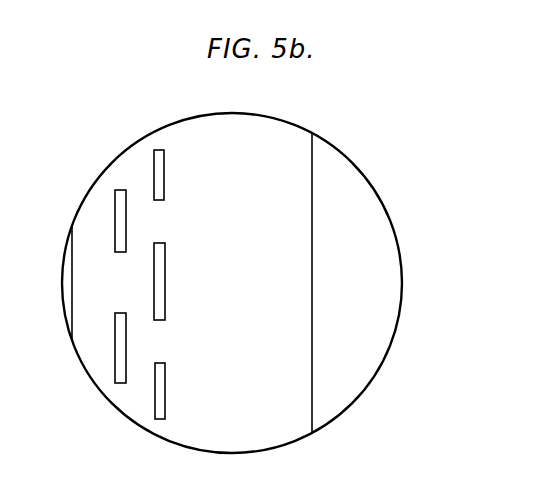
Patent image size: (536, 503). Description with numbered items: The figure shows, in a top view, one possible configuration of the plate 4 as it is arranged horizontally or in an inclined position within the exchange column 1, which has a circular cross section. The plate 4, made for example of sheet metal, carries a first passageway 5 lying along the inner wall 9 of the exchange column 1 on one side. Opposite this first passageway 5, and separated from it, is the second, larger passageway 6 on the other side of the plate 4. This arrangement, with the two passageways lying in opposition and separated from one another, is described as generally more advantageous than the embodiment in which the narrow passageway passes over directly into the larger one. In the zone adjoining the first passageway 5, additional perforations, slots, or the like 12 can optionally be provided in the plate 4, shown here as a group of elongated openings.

The exchange column 1 is at (374, 189).
The plate 4 is at (285, 412).
The first passageway 5 is at (66, 311).
The second passageway 6 is at (352, 365).
The inner wall 9 is at (393, 238).
The perforations or slots 12 is at (158, 388).